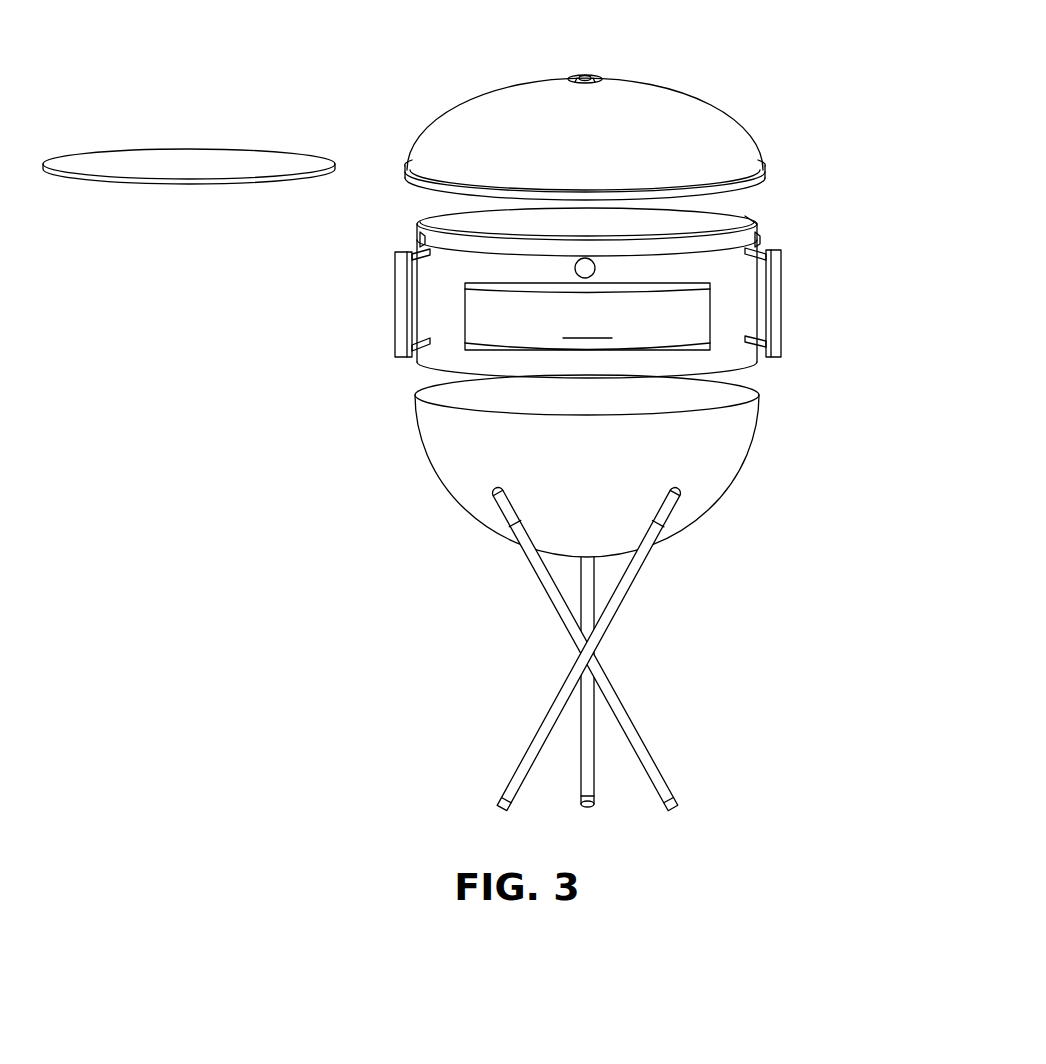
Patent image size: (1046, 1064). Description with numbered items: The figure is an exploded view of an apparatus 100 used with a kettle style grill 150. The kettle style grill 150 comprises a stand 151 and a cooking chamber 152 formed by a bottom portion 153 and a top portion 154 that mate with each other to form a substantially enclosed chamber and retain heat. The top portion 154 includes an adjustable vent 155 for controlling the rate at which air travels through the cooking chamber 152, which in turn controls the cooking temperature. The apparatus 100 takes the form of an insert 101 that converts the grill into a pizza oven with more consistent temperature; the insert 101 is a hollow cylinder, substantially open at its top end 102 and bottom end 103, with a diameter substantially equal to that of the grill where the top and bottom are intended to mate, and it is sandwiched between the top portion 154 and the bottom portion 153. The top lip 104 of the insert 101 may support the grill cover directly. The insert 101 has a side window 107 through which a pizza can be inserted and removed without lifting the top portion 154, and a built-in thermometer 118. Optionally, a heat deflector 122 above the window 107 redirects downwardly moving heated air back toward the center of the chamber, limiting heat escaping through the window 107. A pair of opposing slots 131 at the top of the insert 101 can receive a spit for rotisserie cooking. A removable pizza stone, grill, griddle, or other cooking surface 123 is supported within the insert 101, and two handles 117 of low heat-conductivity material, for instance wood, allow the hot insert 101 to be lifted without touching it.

The apparatus 100 is at (602, 281).
The insert 101 is at (592, 259).
The top end 102 is at (743, 212).
The bottom end 103 is at (748, 364).
The top lip 104 is at (748, 220).
The side window 107 is at (587, 316).
The handles 117 is at (402, 323).
The thermometer 118 is at (587, 268).
The heat deflector 122 is at (547, 238).
The cooking surface 123 is at (392, 200).
The slots 131 is at (421, 235).
The kettle style grill 150 is at (492, 648).
The stand 151 is at (590, 649).
The cooking chamber 152 is at (450, 390).
The bottom portion 153 is at (740, 478).
The top portion 154 is at (601, 102).
The adjustable vent 155 is at (598, 77).